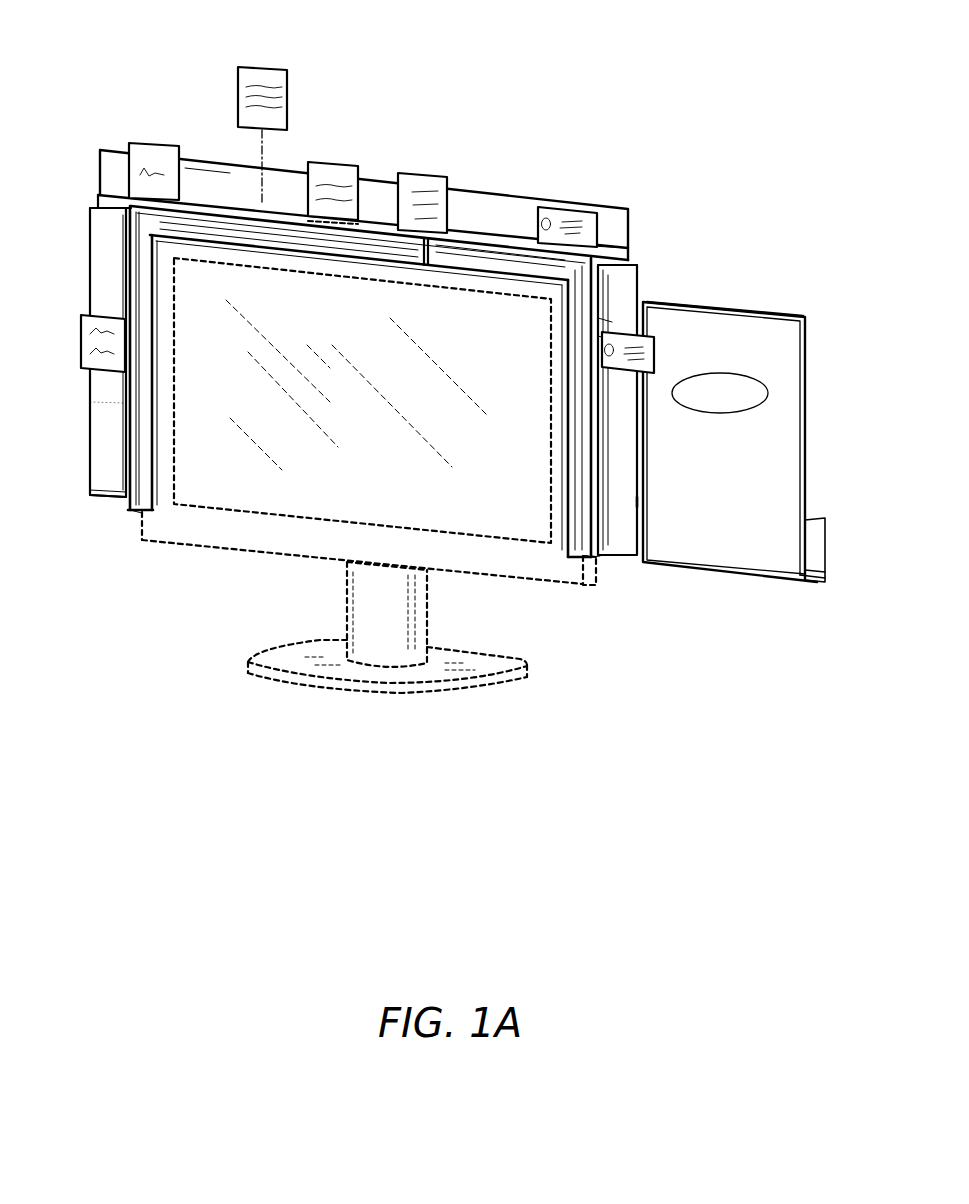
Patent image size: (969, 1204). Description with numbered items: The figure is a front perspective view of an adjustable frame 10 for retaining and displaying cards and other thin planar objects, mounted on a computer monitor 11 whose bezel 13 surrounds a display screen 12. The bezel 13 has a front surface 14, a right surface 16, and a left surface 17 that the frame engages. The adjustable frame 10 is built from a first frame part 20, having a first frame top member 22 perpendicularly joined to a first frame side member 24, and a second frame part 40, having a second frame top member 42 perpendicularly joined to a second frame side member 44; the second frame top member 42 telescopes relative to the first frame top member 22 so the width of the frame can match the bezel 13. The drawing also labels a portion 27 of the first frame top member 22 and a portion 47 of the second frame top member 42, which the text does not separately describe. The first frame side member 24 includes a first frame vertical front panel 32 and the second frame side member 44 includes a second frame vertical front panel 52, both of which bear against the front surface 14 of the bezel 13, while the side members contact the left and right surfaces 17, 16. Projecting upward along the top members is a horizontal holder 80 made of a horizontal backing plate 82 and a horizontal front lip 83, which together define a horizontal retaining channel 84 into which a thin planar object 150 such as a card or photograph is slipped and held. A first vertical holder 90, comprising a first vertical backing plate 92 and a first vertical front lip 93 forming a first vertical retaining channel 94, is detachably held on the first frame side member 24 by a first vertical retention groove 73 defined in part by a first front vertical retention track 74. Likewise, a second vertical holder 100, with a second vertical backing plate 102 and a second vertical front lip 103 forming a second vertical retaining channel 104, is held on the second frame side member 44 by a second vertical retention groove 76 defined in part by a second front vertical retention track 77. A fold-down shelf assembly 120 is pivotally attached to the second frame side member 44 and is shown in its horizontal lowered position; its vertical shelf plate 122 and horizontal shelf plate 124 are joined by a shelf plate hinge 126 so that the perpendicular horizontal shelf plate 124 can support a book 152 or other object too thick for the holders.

The adjustable frame 10 is at (553, 126).
The computer monitor 11 is at (341, 475).
The display screen 12 is at (482, 520).
The bezel 13 is at (523, 582).
The front surface 14 is at (557, 572).
The right surface 16 is at (142, 518).
The left surface 17 is at (588, 588).
The first frame part 20 is at (128, 205).
The first frame top member 22 is at (382, 247).
The first frame side member 24 is at (128, 509).
The top rail divider section 27 is at (398, 250).
The first frame vertical front panel 32 is at (142, 513).
The second frame part 40 is at (592, 258).
The second frame top member 42 is at (462, 242).
The second frame side member 44 is at (593, 562).
The top rail right section face 47 is at (497, 257).
The second frame vertical front panel 52 is at (600, 560).
The first vertical retention groove 73 is at (128, 499).
The first front vertical retention track 74 is at (128, 482).
The second vertical retention groove 76 is at (602, 291).
The second front vertical retention track 77 is at (602, 287).
The horizontal holder 80 is at (104, 148).
The horizontal backing plate 82 is at (213, 170).
The horizontal front lip 83 is at (98, 200).
The horizontal retaining channel 84 is at (238, 203).
The first vertical holder 90 is at (100, 440).
The first vertical backing plate 92 is at (106, 402).
The first vertical front lip 93 is at (128, 387).
The first vertical retaining channel 94 is at (124, 330).
The second vertical holder 100 is at (728, 411).
The second vertical backing plate 102 is at (612, 295).
The second vertical front lip 103 is at (598, 322).
The second vertical retaining channel 104 is at (600, 340).
The fold-down shelf assembly 120 is at (757, 476).
The vertical shelf plate 122 is at (824, 520).
The horizontal shelf plate 124 is at (817, 583).
The shelf plate hinge 126 is at (814, 571).
The thin planar object 150 is at (247, 66).
The book 152 is at (804, 313).